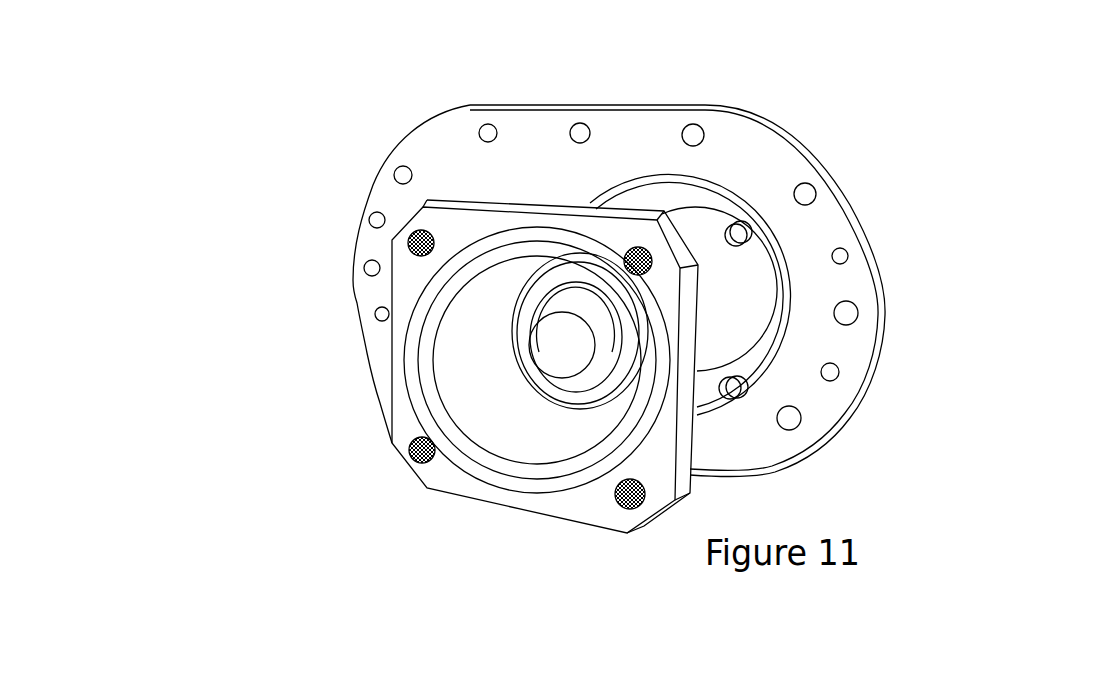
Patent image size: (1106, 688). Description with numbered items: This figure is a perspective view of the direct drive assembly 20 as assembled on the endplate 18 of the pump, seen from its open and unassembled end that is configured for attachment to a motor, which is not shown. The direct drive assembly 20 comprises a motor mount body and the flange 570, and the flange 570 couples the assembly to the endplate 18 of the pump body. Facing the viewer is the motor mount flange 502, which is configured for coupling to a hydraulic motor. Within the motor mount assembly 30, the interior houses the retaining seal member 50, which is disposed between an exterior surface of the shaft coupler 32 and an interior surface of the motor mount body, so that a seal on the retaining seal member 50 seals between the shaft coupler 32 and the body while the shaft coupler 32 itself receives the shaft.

The endplate 18 is at (752, 146).
The direct drive assembly 20 is at (730, 327).
The motor mount assembly 30 is at (417, 380).
The shaft coupler 32 is at (549, 380).
The retaining seal member 50 is at (612, 392).
The motor mount flange 502 is at (402, 417).
The flange 570 is at (768, 318).